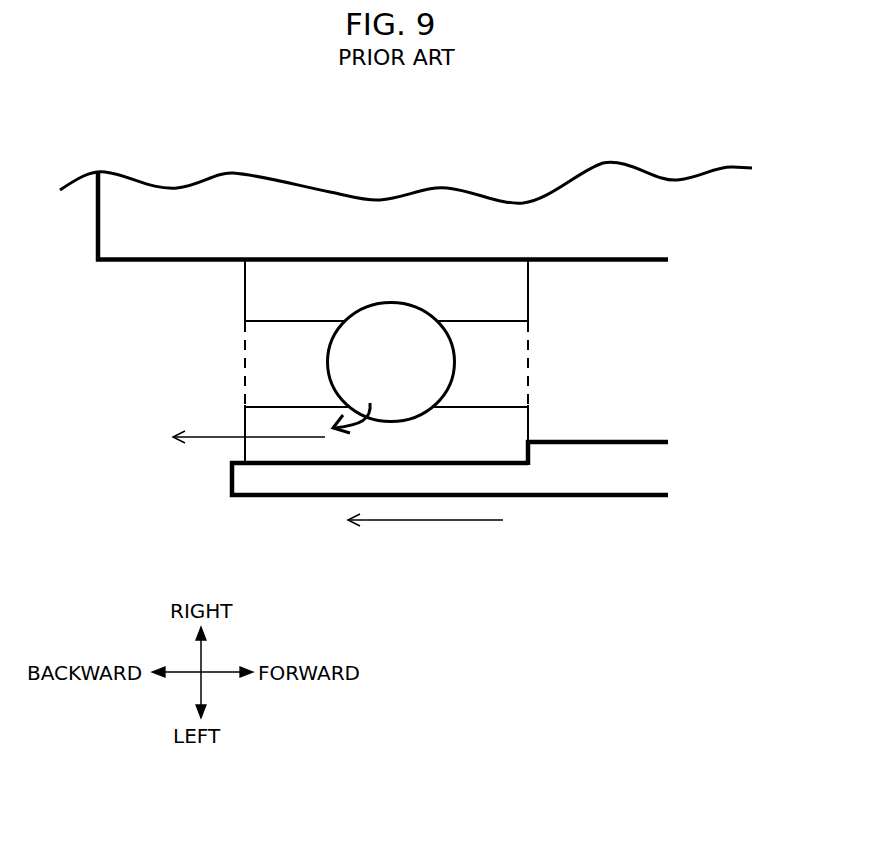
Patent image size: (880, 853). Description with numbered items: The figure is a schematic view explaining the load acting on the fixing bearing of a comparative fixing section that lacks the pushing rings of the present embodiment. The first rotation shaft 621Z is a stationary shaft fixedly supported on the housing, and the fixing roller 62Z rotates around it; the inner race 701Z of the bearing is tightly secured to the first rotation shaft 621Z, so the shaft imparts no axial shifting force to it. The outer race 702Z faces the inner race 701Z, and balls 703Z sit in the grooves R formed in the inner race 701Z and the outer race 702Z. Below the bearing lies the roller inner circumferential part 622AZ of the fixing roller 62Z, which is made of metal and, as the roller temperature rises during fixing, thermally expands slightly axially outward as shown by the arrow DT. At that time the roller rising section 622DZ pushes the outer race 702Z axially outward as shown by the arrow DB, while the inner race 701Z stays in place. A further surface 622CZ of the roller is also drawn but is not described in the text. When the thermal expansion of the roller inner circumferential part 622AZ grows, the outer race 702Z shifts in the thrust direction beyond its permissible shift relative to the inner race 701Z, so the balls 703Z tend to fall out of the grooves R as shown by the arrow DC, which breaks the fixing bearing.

The first rotation shaft 621Z is at (155, 228).
The inner race 701Z is at (410, 277).
The outer race 702Z is at (295, 452).
The balls 703Z is at (442, 360).
The grooves R is at (353, 310).
The fixing roller 62Z is at (512, 497).
The upper surface of lower plate 622CZ is at (333, 467).
The roller rising section 622DZ is at (532, 453).
The roller inner circumferential part 622AZ is at (633, 482).
The arrow DC is at (350, 414).
The arrow DB is at (205, 439).
The arrow DT is at (430, 523).